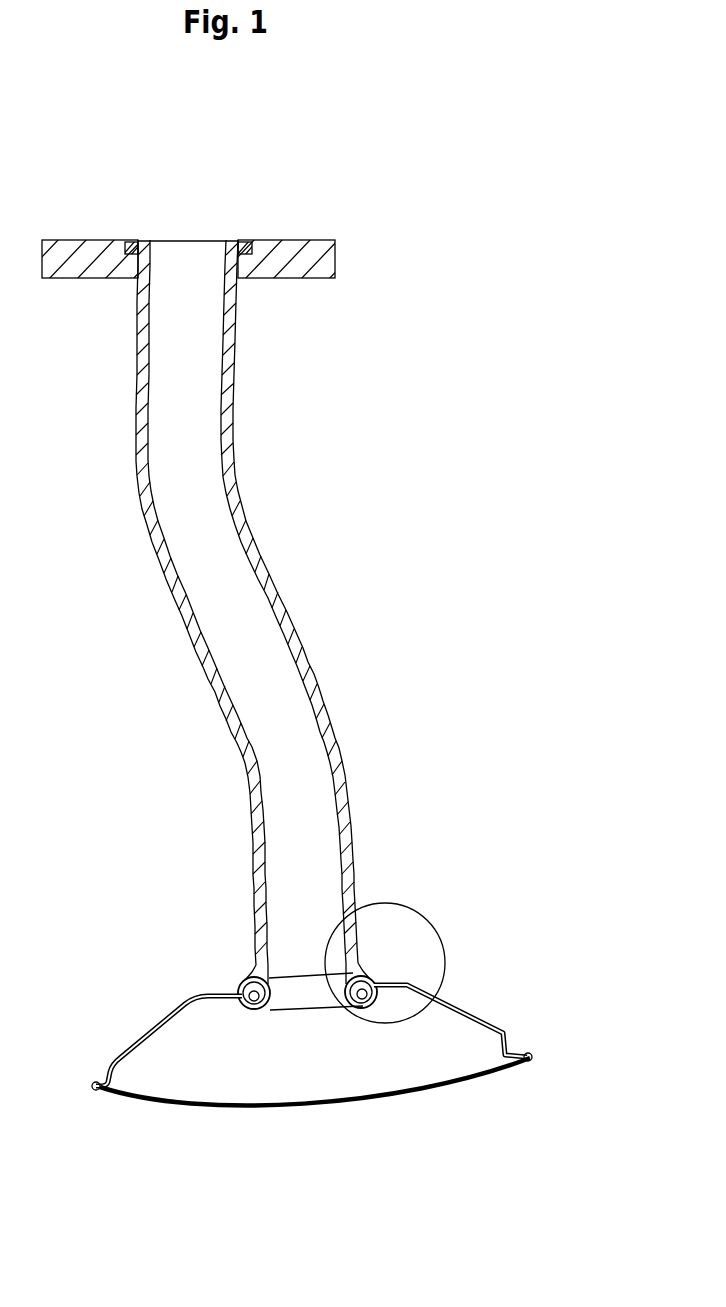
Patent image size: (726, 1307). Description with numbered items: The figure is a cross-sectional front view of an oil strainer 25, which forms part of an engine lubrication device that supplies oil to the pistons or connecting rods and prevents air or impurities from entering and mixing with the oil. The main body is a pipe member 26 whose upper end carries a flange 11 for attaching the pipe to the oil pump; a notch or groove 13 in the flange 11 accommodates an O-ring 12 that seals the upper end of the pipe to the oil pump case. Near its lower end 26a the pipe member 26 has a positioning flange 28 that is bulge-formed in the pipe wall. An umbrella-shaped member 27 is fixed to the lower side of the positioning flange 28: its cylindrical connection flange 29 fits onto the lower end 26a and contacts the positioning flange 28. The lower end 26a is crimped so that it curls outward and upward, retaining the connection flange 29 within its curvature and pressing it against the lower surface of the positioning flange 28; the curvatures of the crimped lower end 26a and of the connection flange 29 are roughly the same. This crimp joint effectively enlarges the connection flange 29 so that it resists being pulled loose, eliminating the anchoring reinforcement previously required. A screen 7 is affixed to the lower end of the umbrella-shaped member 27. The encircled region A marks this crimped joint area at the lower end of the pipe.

The oil strainer 25 is at (393, 200).
The flange 11 is at (336, 268).
The O-ring 12 is at (137, 240).
The notch or groove 13 is at (240, 240).
The pipe member 26 is at (320, 695).
The lower end 26a is at (367, 1008).
The umbrella-shaped member 27 is at (467, 1005).
The positioning flange 28 is at (373, 978).
The cylindrical connection flange 29 is at (248, 1012).
The screen 7 is at (335, 1107).
The detail region A is at (405, 903).